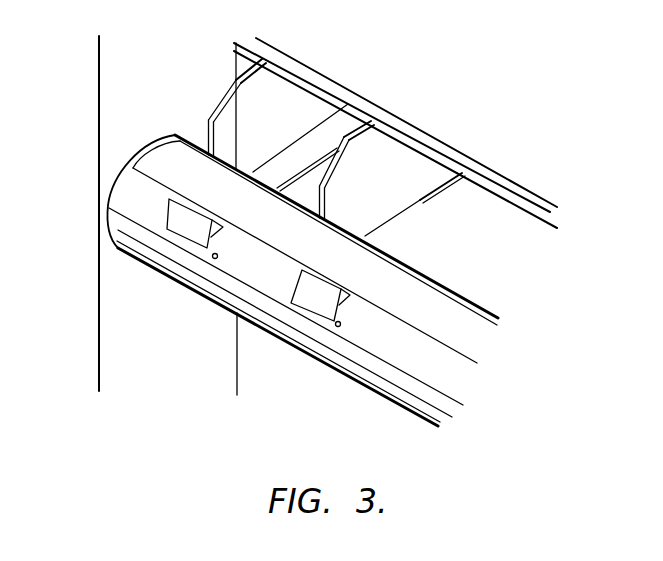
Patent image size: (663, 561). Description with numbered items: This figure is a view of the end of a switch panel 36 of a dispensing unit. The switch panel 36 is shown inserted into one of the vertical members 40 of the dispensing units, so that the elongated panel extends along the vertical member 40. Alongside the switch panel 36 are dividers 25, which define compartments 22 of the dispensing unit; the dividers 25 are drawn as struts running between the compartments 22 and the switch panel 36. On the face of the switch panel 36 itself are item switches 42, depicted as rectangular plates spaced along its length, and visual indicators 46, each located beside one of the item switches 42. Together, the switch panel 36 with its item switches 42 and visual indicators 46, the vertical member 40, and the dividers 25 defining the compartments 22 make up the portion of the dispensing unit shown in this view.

The compartment 22 is at (300, 103).
The divider 25 is at (222, 98).
The switch panel 36 is at (457, 387).
The vertical member 40 is at (115, 292).
The item switch 42 is at (190, 231).
The visual indicator 46 is at (218, 255).